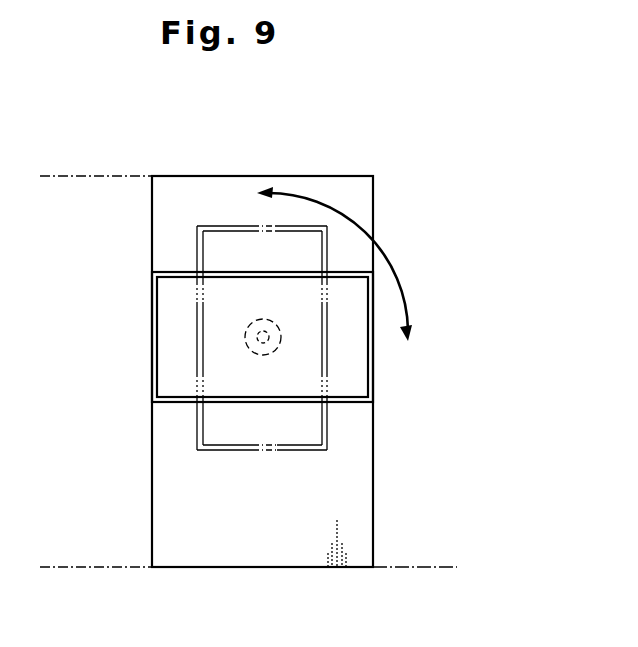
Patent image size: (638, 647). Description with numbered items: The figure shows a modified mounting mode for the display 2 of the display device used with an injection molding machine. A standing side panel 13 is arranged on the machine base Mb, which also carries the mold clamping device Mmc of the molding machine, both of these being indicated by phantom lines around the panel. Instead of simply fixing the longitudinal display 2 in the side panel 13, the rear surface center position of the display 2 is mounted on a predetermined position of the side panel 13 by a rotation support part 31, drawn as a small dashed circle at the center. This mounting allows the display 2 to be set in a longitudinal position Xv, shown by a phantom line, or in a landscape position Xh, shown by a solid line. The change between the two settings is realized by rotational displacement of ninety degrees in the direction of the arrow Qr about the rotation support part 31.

The side panel 13 is at (362, 176).
The display 2 is at (275, 387).
The rotation support part 31 is at (245, 334).
The arrow Qr is at (389, 262).
The landscape position Xh is at (386, 378).
The longitudinal position Xv is at (236, 464).
The mold clamping device Mmc is at (112, 196).
The machine base Mb is at (445, 567).